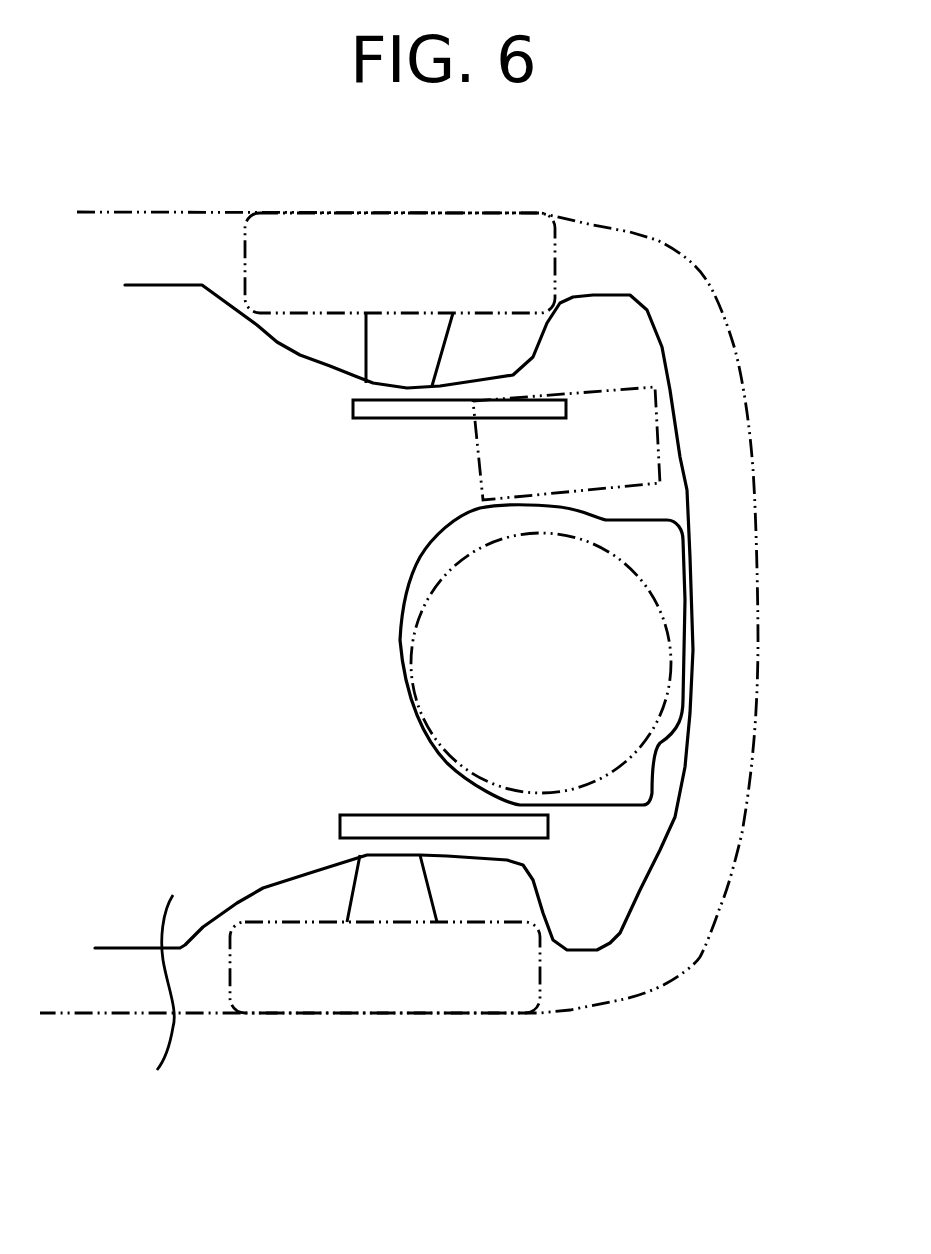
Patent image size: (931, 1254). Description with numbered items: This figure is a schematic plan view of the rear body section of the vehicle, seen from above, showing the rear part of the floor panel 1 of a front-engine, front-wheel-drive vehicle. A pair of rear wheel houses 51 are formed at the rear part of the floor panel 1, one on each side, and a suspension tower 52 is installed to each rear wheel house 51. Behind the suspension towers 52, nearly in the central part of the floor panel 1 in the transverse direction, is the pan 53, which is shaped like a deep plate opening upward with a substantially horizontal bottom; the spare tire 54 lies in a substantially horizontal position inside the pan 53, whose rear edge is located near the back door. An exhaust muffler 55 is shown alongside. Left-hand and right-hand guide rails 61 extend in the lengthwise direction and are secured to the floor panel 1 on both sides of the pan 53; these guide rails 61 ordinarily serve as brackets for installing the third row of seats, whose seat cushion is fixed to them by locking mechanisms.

The floor panel 1 is at (399, 650).
The rear wheel house 51 is at (277, 343).
The suspension tower 52 is at (382, 365).
The pan 53 is at (665, 562).
The spare tire 54 is at (655, 655).
The exhaust muffler 55 is at (637, 437).
The guide rail 61 is at (422, 410).